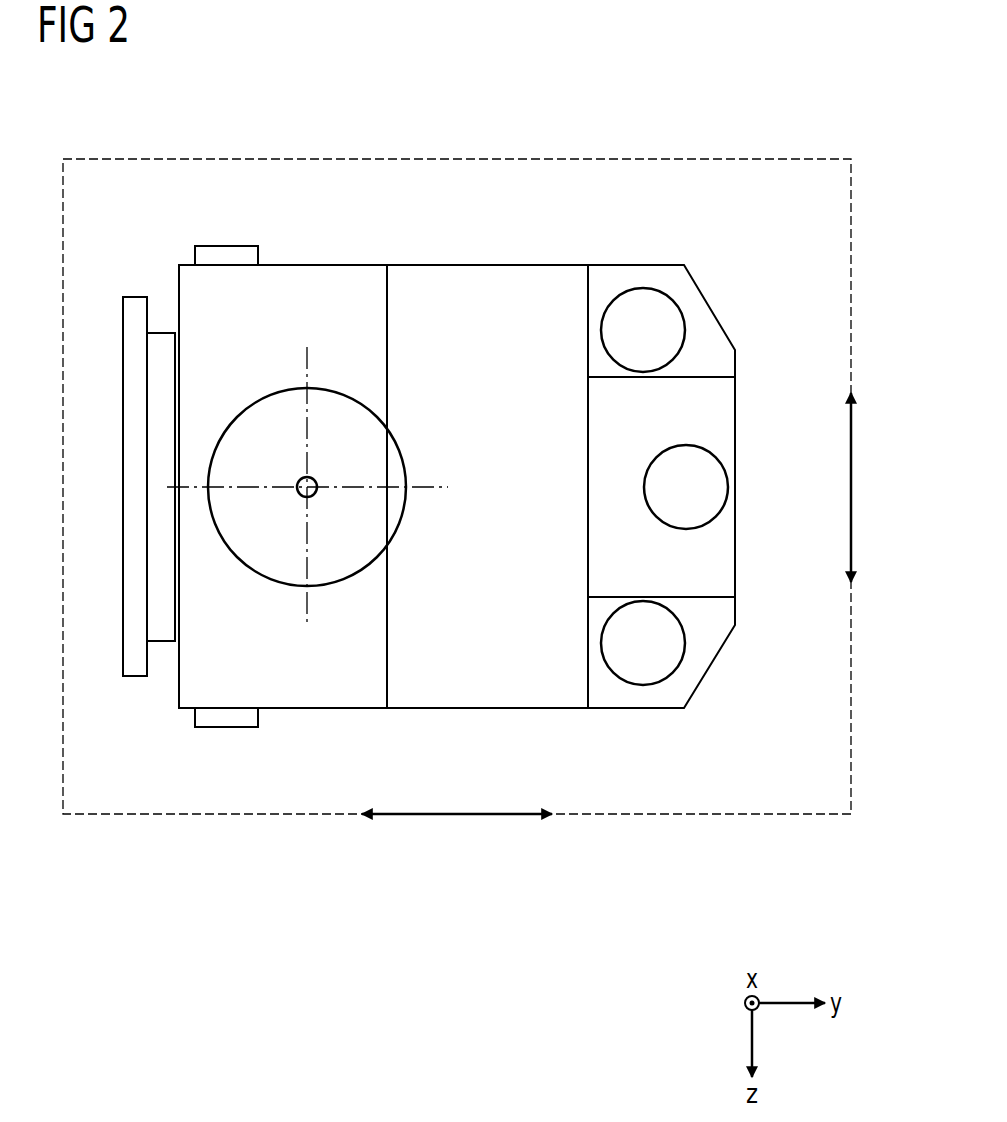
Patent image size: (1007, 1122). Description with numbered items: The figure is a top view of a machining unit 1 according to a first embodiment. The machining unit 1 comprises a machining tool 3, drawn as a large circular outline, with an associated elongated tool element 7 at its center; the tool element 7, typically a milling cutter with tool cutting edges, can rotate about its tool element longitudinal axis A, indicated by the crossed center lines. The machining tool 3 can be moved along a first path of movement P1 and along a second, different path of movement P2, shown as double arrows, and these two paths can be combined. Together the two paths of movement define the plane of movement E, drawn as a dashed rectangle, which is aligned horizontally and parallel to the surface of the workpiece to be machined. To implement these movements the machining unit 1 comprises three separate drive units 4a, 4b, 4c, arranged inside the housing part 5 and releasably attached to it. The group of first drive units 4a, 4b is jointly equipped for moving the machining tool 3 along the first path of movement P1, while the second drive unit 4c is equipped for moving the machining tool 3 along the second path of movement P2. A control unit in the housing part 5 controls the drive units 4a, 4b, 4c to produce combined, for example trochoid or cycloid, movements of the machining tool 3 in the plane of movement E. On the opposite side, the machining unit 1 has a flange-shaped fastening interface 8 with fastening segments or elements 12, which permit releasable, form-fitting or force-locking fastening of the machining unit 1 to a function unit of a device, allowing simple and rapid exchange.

The machining unit 1 is at (368, 120).
The machining tool 3 is at (345, 553).
The first drive unit 4a is at (642, 307).
The first drive unit 4b is at (642, 663).
The second drive unit 4c is at (708, 485).
The housing part 5 is at (510, 265).
The tool element 7 is at (300, 496).
The fastening interface 8 is at (145, 273).
The fastening segment 12 is at (133, 677).
The tool element longitudinal axis A is at (318, 477).
The plane of movement E is at (852, 735).
The first path of movement P1 is at (455, 817).
The second path of movement P2 is at (852, 487).